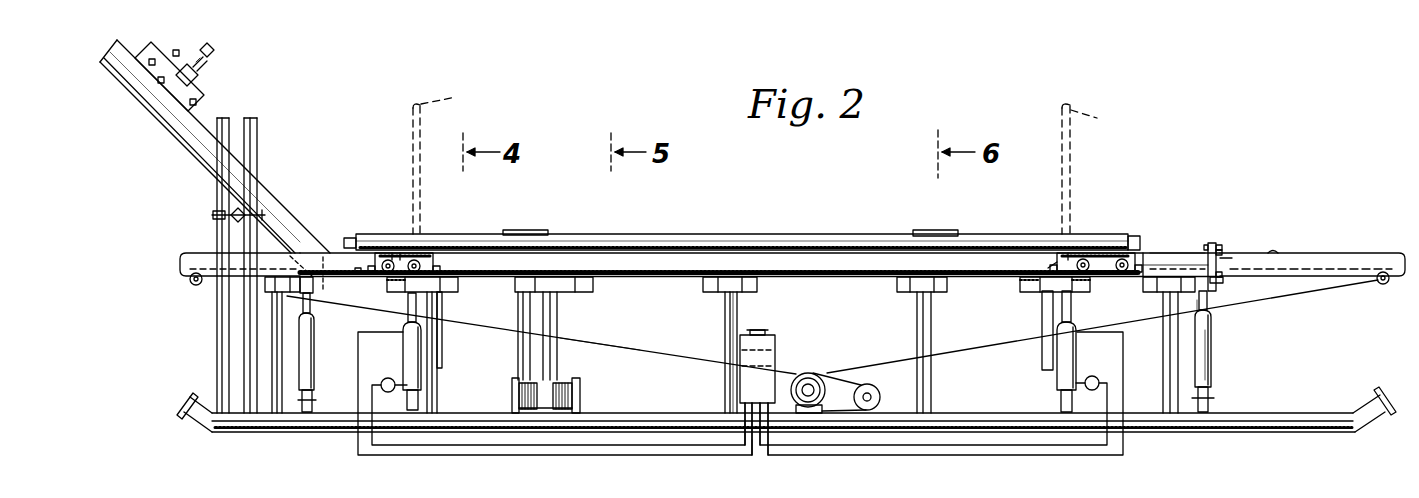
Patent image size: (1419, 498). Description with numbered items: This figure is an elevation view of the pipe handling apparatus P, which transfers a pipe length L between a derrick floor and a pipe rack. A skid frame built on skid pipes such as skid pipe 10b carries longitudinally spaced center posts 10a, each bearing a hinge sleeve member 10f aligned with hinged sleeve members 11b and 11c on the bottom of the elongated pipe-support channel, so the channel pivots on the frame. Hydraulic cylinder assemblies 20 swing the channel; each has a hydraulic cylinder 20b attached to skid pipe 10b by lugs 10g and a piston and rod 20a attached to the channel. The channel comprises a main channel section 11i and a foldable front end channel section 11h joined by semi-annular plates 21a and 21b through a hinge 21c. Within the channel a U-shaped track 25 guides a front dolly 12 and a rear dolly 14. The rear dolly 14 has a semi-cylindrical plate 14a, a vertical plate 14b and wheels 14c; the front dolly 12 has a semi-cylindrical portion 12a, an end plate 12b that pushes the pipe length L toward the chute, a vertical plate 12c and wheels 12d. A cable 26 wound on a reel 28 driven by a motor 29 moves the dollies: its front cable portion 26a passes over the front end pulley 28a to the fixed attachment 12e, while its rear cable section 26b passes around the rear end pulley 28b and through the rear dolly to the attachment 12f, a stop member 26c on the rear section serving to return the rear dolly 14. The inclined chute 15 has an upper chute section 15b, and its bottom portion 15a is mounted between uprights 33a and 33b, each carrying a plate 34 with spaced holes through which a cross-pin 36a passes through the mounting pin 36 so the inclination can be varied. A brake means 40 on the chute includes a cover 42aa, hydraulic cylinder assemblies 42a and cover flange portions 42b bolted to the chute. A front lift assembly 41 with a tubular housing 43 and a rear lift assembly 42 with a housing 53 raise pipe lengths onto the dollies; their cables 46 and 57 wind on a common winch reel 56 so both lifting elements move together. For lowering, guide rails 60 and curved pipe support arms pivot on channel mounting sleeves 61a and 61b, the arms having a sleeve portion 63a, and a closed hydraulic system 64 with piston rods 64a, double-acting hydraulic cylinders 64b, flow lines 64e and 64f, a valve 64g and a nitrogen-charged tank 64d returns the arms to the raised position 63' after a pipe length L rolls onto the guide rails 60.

The center posts 10a is at (558, 326).
The skid pipe 10b is at (243, 432).
The hinge sleeve member 10f is at (725, 300).
The lugs 10g is at (1210, 400).
The hinged sleeve member 11b is at (515, 288).
The hinged sleeve member 11c is at (593, 288).
The front end channel section 11h is at (1340, 251).
The main channel section 11i is at (1214, 243).
The front dolly 12 is at (1142, 265).
The semi-cylindrical portion 12a is at (1083, 258).
The end plate 12b is at (1135, 236).
The vertical plate 12c is at (1062, 258).
The wheels 12d is at (1120, 258).
The fixed attachment 12e is at (1155, 265).
The attachment 12f is at (1053, 266).
The rear dolly 14 is at (412, 255).
The semi-cylindrical plate 14a is at (384, 258).
The vertical plate 14b is at (424, 258).
The wheels 14c is at (392, 252).
The inclined chute 15 is at (146, 110).
The bottom portion of the chute 15a is at (325, 291).
The upper chute section 15b is at (270, 168).
The hydraulic cylinder assemblies 20 is at (316, 350).
The piston and rod 20a is at (1211, 303).
The hydraulic cylinder 20b is at (1212, 356).
The semi-annular plate 21a is at (1220, 248).
The semi-annular plate 21b is at (1225, 258).
The hinge 21c is at (1222, 253).
The track 25 is at (661, 246).
The cable 26 is at (655, 359).
The front cable portion 26a is at (1001, 365).
The rear cable section 26b is at (624, 352).
The stop member 26c is at (356, 266).
The reel 28 is at (804, 373).
The front end pulley 28a is at (1386, 285).
The rear end pulley 28b is at (190, 283).
The motor 29 is at (880, 393).
The upright 33a is at (258, 124).
The upright 33b is at (232, 118).
The plate 34 is at (252, 142).
The mounting pin 36 is at (231, 213).
The cross-pin 36a is at (213, 216).
The brake means 40 is at (216, 64).
The front lift assembly 41 is at (932, 231).
The rear lift assembly 42 is at (525, 230).
The hydraulic cylinder assemblies 42a is at (199, 77).
The cover 42aa is at (174, 47).
The cover flange portions 42b is at (205, 93).
The housing 43 is at (933, 380).
The cable 46 is at (556, 358).
The housing 53 is at (520, 320).
The winch reel 56 is at (513, 385).
The cable 57 is at (520, 350).
The guide rails 60 is at (441, 344).
The mounting sleeve 61a is at (458, 283).
The mounting sleeve 61b is at (388, 288).
The raised position 63' is at (767, 162).
The sleeve portion 63a is at (1080, 292).
The closed hydraulic system 64 is at (403, 346).
The piston rod 64a is at (558, 388).
The hydraulic cylinder 64b is at (1057, 373).
The hydraulic fluid tank 64d is at (740, 346).
The return flow line 64e is at (813, 446).
The flow line 64f is at (870, 456).
The valve 64g is at (1092, 375).
The pipe length L is at (818, 235).
The pipe handling apparatus P is at (1155, 221).